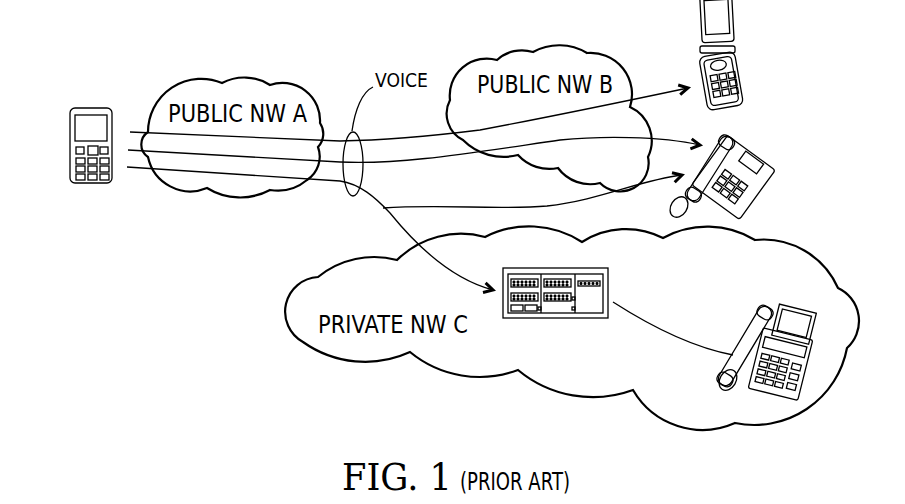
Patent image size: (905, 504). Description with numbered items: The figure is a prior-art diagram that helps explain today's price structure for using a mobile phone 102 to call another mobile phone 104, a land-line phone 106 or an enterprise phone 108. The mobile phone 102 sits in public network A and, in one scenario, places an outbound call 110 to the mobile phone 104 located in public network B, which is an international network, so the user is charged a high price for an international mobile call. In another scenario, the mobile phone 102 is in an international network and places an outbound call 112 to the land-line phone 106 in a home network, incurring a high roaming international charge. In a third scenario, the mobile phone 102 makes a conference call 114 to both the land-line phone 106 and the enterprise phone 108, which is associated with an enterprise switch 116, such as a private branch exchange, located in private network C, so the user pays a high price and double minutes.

The mobile phone 102 is at (92, 108).
The mobile phone 104 is at (734, 41).
The land-line phone 106 is at (760, 150).
The enterprise phone 108 is at (788, 306).
The outbound call 110 is at (382, 137).
The outbound call 112 is at (402, 162).
The conference call 114 is at (383, 208).
The enterprise switch 116 is at (553, 319).